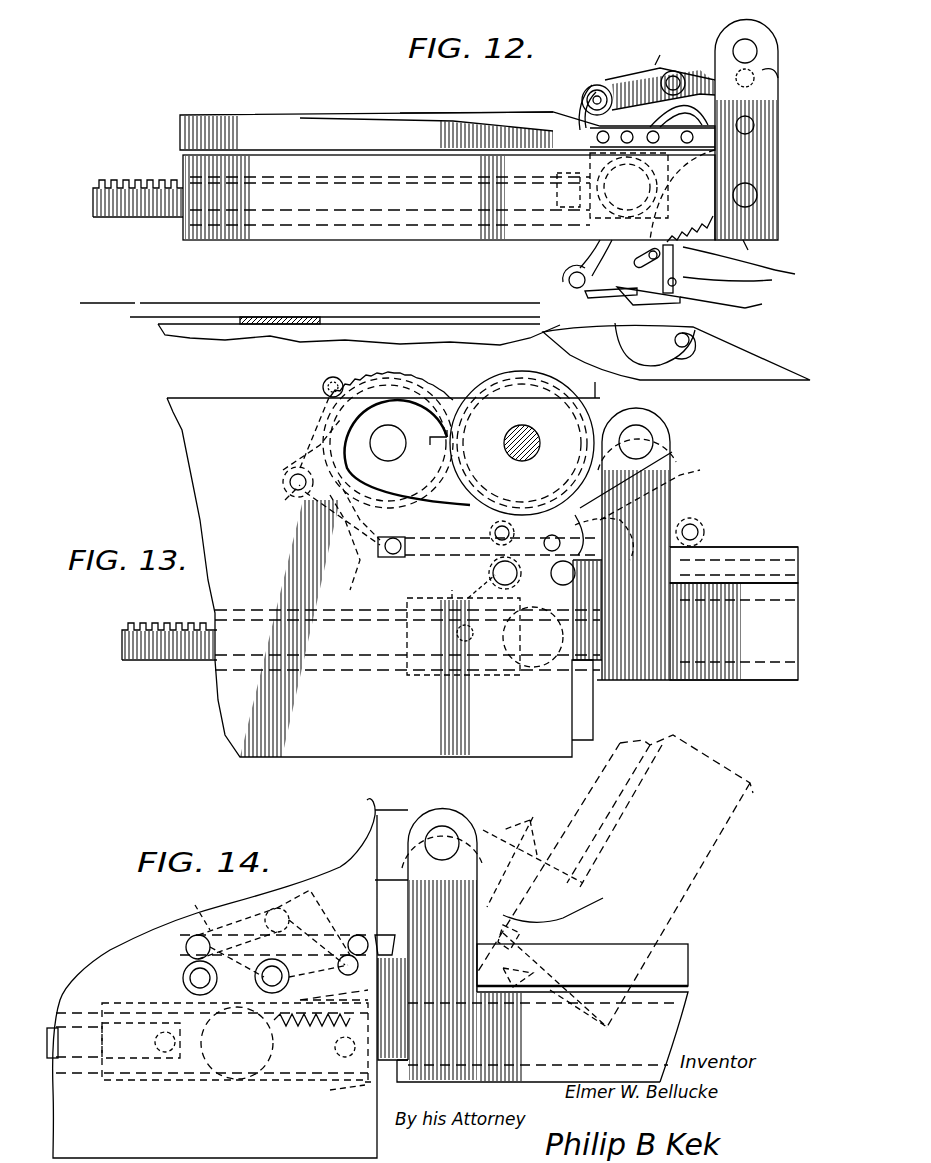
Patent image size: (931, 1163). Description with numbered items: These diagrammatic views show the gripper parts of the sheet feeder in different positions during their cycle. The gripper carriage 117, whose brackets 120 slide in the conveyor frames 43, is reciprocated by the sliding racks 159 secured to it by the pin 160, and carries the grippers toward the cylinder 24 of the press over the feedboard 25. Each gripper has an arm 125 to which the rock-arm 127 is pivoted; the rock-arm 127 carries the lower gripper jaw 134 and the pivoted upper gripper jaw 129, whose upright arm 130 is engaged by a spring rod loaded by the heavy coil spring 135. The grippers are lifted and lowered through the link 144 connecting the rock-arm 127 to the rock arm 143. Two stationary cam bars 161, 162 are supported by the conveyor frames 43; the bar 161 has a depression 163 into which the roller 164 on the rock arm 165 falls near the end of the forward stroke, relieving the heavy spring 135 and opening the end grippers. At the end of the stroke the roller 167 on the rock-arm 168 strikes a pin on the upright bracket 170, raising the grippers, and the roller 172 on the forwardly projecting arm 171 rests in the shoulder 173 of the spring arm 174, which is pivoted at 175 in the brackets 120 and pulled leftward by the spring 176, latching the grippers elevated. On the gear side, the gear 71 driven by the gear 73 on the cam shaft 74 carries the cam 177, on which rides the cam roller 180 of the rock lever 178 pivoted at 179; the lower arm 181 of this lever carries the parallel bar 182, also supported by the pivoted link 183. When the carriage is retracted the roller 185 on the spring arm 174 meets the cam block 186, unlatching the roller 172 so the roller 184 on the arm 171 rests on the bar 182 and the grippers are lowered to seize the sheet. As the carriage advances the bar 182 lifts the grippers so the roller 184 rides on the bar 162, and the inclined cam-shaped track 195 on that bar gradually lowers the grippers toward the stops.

In FIG. 12, the cylinder 24 is at (676, 351).
In FIG. 12, the feedboard 25 is at (307, 335).
In FIG. 13, the conveyor frames 43 is at (734, 631).
In FIG. 14, the conveyor frames 43 is at (548, 1037).
In FIG. 13, the gear 71 is at (420, 384).
In FIG. 13, the gear 73 is at (495, 385).
In FIG. 13, the cam shaft 74 is at (532, 432).
In FIG. 12, the gripper carriage 117 is at (488, 240).
In FIG. 13, the gripper carriage 117 is at (380, 672).
In FIG. 14, the gripper carriage 117 is at (118, 1105).
In FIG. 12, the brackets 120 is at (757, 253).
In FIG. 12, the arm 125 is at (563, 285).
In FIG. 12, the rock-arm 127 is at (636, 262).
In FIG. 12, the upper gripper jaw 129 is at (622, 292).
In FIG. 12, the upright arm 130 is at (764, 310).
In FIG. 12, the lower gripper jaw 134 is at (675, 293).
In FIG. 12, the coil spring 135 is at (792, 274).
In FIG. 12, the rock arm 143 is at (660, 65).
In FIG. 12, the link 144 is at (727, 277).
In FIG. 12, the sliding racks 159 is at (104, 183).
In FIG. 13, the sliding racks 159 is at (200, 645).
In FIG. 14, the sliding racks 159 is at (50, 1027).
In FIG. 12, the pin 160 is at (548, 240).
In FIG. 13, the pin 160 is at (450, 672).
In FIG. 14, the pin 160 is at (212, 1041).
In FIG. 12, the cam bar 161 is at (505, 116).
In FIG. 12, the cam bar 162 is at (291, 128).
In FIG. 13, the cam bar 162 is at (782, 548).
In FIG. 14, the cam bar 162 is at (648, 742).
In FIG. 12, the depression 163 is at (580, 110).
In FIG. 12, the roller 164 is at (585, 85).
In FIG. 12, the rock arm 165 is at (627, 187).
In FIG. 12, the roller 167 is at (598, 85).
In FIG. 12, the rock-arm 168 is at (650, 62).
In FIG. 12, the upright bracket 170 is at (732, 30).
In FIG. 13, the upright bracket 170 is at (660, 442).
In FIG. 14, the upright bracket 170 is at (446, 822).
In FIG. 12, the arm 171 is at (688, 100).
In FIG. 13, the arm 171 is at (700, 480).
In FIG. 12, the roller 172 is at (743, 79).
In FIG. 13, the roller 172 is at (734, 565).
In FIG. 14, the roller 172 is at (334, 990).
In FIG. 12, the shoulder 173 is at (760, 160).
In FIG. 14, the shoulder 173 is at (388, 933).
In FIG. 12, the spring arm 174 is at (755, 125).
In FIG. 13, the spring arm 174 is at (734, 574).
In FIG. 14, the spring arm 174 is at (346, 1097).
In FIG. 12, the pivot 175 is at (758, 195).
In FIG. 12, the spring 176 is at (629, 189).
In FIG. 13, the spring 176 is at (532, 594).
In FIG. 14, the spring 176 is at (266, 1009).
In FIG. 13, the cam 177 is at (282, 470).
In FIG. 13, the rock lever 178 is at (300, 440).
In FIG. 13, the pivot 179 is at (290, 498).
In FIG. 13, the cam roller 180 is at (342, 381).
In FIG. 13, the lower arm 181 is at (342, 544).
In FIG. 14, the lower arm 181 is at (189, 909).
In FIG. 13, the parallel bar 182 is at (450, 608).
In FIG. 14, the parallel bar 182 is at (237, 942).
In FIG. 13, the pivoted link 183 is at (470, 520).
In FIG. 14, the pivoted link 183 is at (300, 893).
In FIG. 12, the roller 184 is at (673, 71).
In FIG. 13, the roller 184 is at (648, 502).
In FIG. 12, the roller 185 is at (770, 82).
In FIG. 13, the roller 185 is at (704, 532).
In FIG. 14, the roller 185 is at (582, 965).
In FIG. 13, the cam block 186 is at (666, 495).
In FIG. 14, the cam block 186 is at (535, 820).
In FIG. 12, the cam-shaped track 195 is at (456, 122).